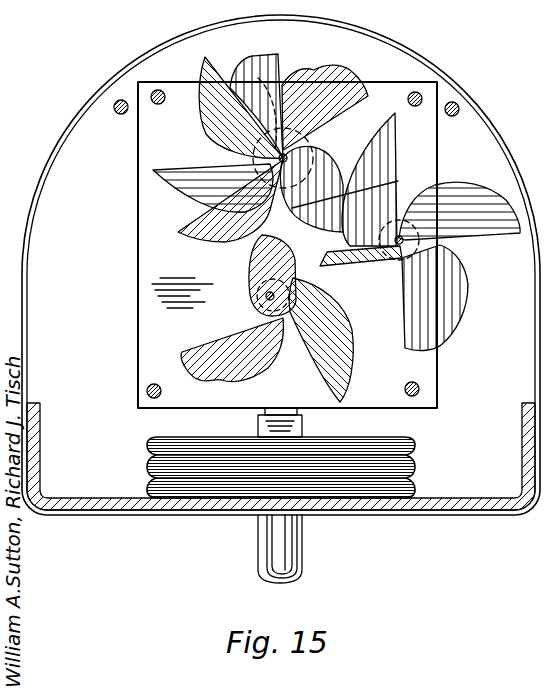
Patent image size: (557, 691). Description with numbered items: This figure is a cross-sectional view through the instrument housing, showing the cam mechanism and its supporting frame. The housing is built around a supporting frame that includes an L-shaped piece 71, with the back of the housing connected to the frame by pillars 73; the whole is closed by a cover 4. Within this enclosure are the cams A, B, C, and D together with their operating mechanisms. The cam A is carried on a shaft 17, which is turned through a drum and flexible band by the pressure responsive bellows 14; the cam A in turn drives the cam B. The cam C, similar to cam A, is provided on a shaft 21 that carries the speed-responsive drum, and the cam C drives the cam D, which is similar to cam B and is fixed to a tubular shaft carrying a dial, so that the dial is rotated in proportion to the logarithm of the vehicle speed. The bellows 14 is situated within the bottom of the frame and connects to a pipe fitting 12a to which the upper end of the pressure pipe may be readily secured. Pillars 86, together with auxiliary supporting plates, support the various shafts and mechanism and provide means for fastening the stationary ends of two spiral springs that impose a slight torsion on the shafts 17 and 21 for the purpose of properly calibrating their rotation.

The housing shell 4 is at (22, 253).
The pipe fitting 12a is at (302, 569).
The bellows 14 is at (147, 468).
The shaft 17 is at (264, 296).
The shaft 21 is at (446, 260).
The L-shaped piece 71 is at (380, 514).
The pillars 73 is at (118, 114).
The pillars 86 is at (147, 392).
The cam A is at (250, 266).
The cam B is at (186, 238).
The cam C is at (392, 174).
The cam D is at (318, 150).